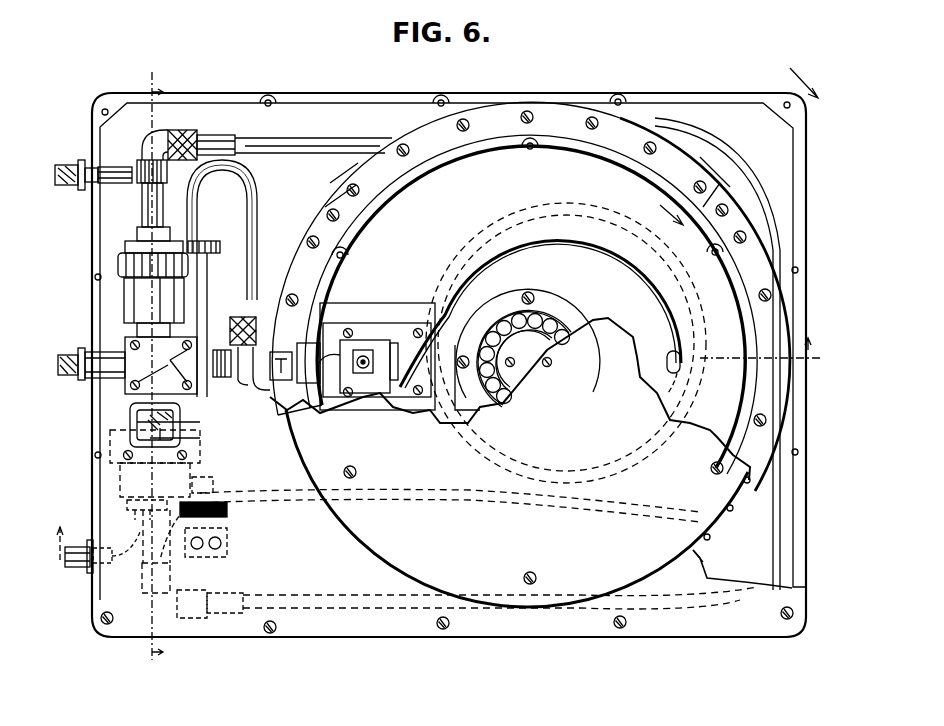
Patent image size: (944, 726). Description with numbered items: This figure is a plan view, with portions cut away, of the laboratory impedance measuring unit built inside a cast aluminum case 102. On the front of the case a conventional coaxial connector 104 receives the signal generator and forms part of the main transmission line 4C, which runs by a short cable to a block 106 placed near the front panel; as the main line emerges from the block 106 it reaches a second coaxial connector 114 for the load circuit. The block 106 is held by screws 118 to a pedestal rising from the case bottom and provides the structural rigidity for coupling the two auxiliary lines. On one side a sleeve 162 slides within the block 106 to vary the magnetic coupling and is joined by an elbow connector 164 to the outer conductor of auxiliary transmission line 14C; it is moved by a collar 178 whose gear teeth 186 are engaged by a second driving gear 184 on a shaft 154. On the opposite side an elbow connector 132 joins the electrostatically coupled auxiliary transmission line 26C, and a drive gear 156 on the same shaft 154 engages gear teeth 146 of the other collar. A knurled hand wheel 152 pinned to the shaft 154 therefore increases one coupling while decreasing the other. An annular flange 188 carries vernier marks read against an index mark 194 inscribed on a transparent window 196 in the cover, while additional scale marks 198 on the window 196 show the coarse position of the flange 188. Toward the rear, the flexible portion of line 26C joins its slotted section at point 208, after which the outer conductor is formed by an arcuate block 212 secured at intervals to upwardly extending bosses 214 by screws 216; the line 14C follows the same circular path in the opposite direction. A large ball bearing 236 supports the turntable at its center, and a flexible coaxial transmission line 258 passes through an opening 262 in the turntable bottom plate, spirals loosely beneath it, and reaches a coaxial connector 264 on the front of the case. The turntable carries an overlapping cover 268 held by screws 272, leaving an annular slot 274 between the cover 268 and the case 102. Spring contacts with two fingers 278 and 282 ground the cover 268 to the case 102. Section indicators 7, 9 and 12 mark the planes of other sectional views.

The cast aluminum case 102 is at (390, 93).
The section line 9- 9 is at (150, 369).
The section line 7- 7 is at (433, 449).
The section line 12- 12 is at (733, 145).
The arcuate block 212 is at (622, 130).
The screws 216 is at (353, 190).
The bosses 214 is at (340, 176).
The auxiliary transmission line 14C is at (346, 140).
The cover 268 is at (623, 305).
The flexible coaxial transmission line 258 is at (462, 282).
The screws 272 is at (352, 470).
The annular slot 274 is at (693, 560).
The ball bearing 236 is at (548, 318).
The point 208 is at (760, 352).
The opening 262 is at (682, 374).
The finger 282 is at (300, 395).
The finger 278 is at (270, 370).
The coaxial connector 104 is at (70, 163).
The elbow connector 164 is at (142, 148).
The sleeve 162 is at (142, 210).
The gear teeth 186 is at (118, 262).
The collar 178 is at (124, 295).
The block 106 is at (112, 334).
The screws 118 is at (162, 366).
The coaxial connector 114 is at (68, 352).
The main transmission line 4C is at (254, 185).
The second driving gear 184 is at (220, 247).
The shaft 154 is at (240, 300).
The transparent window 196 is at (130, 420).
The annular flange 188 is at (110, 448).
The scale marks 198 is at (184, 419).
The index mark 194 is at (190, 438).
The drive gear 156 is at (213, 485).
The gear teeth 146 is at (131, 510).
The knurled hand wheel 152 is at (227, 514).
The elbow connector 132 is at (177, 600).
The auxiliary transmission line 26C is at (318, 595).
The coaxial connector 264 is at (75, 568).